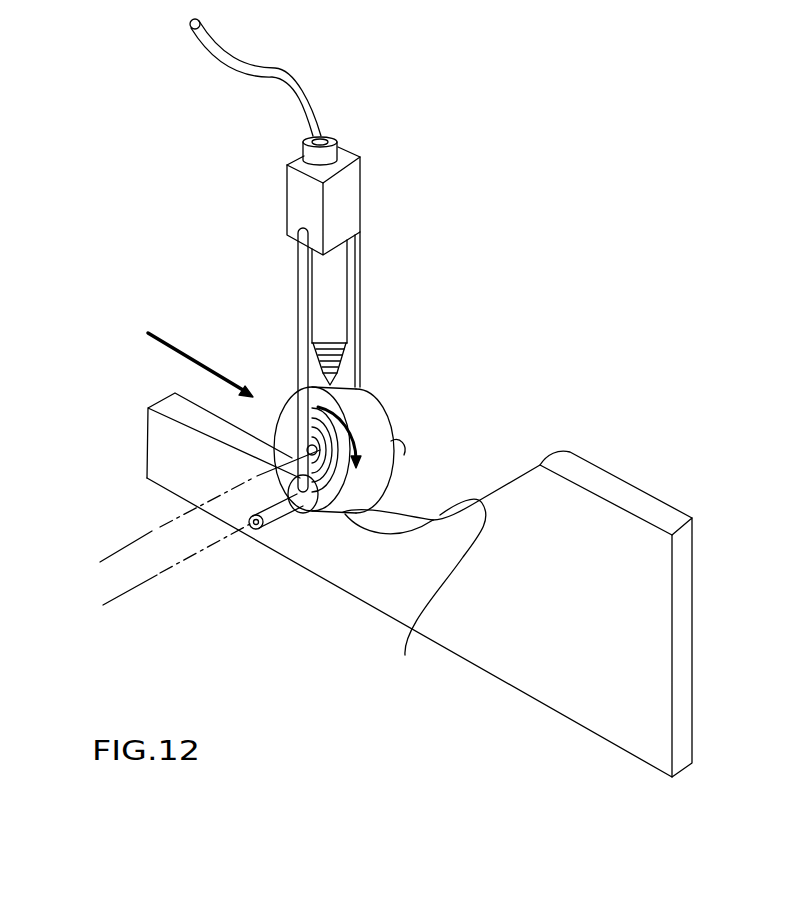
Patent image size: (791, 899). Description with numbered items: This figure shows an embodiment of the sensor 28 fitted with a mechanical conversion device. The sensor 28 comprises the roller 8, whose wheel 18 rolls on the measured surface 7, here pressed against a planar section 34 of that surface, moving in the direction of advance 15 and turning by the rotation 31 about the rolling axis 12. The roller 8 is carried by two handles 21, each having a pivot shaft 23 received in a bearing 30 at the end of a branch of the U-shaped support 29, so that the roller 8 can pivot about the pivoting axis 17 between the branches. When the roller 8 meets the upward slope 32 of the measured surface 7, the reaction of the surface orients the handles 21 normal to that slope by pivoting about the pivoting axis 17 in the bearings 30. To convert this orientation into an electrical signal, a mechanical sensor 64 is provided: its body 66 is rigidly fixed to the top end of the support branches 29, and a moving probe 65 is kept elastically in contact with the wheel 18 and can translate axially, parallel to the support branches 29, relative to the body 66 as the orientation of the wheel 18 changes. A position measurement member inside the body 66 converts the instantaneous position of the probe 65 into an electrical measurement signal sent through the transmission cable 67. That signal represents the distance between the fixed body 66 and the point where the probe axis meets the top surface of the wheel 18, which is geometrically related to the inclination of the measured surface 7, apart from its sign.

The measured surface 7 is at (623, 500).
The roller 8 is at (281, 378).
The rolling axis 12 is at (142, 540).
The direction of advance 15 is at (180, 348).
The pivoting axis 17 is at (148, 583).
The wheel 18 is at (280, 420).
The handles 21 is at (341, 506).
The pivot shaft 23 is at (272, 518).
The sensor 28 is at (280, 265).
The U-shaped support 29 is at (300, 315).
The bearing 30 is at (312, 518).
The rotation 31 is at (350, 430).
The upward slope 32 is at (438, 592).
The planar section 34 is at (168, 407).
The mechanical sensor 64 is at (338, 284).
The moving probe 65 is at (357, 368).
The body 66 is at (345, 200).
The transmission cable 67 is at (287, 70).